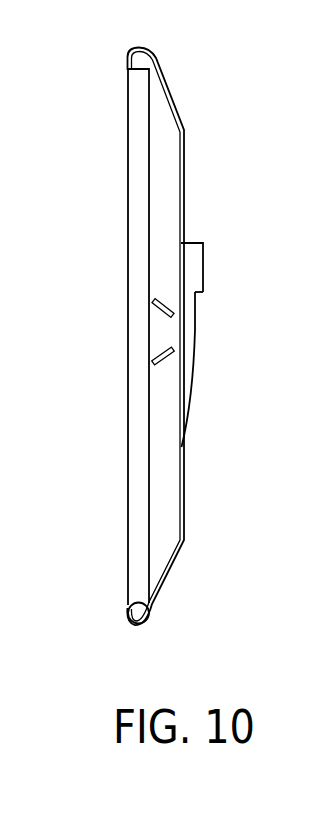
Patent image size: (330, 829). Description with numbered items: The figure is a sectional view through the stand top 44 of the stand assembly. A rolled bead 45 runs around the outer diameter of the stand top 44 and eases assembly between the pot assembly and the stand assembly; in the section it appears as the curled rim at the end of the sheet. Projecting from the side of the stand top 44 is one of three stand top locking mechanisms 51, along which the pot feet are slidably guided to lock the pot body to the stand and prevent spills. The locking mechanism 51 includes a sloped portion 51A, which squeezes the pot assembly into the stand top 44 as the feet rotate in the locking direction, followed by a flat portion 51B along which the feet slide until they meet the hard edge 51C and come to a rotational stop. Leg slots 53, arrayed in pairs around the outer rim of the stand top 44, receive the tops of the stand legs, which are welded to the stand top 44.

The stand top 44 is at (170, 83).
The rolled bead 45 is at (130, 60).
The stand top locking mechanism 51 is at (203, 243).
The sloped portion 51A is at (192, 395).
The flat portion 51B is at (199, 303).
The edge 51C is at (204, 292).
The leg slots 53 is at (156, 313).